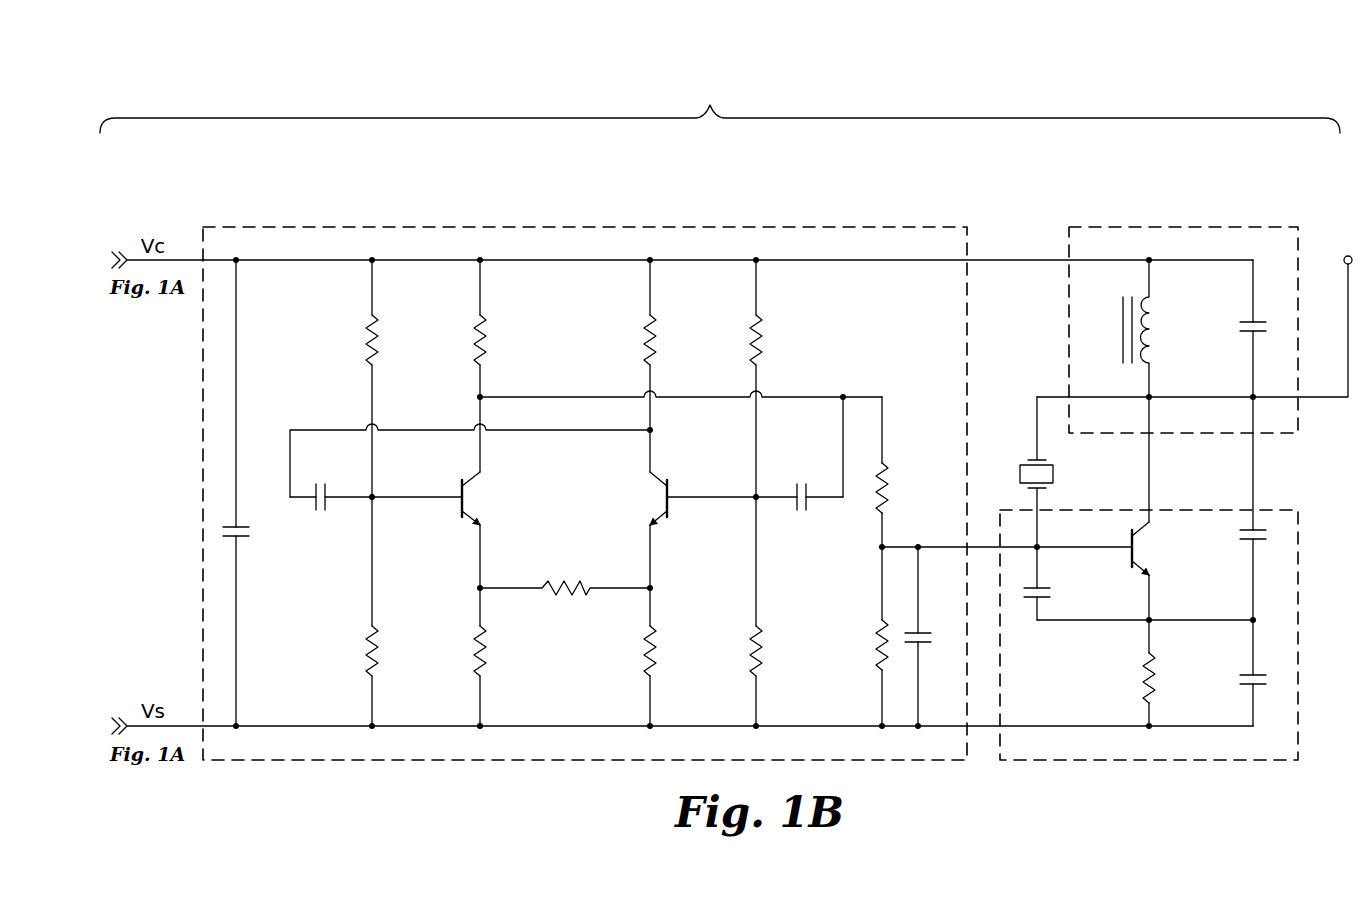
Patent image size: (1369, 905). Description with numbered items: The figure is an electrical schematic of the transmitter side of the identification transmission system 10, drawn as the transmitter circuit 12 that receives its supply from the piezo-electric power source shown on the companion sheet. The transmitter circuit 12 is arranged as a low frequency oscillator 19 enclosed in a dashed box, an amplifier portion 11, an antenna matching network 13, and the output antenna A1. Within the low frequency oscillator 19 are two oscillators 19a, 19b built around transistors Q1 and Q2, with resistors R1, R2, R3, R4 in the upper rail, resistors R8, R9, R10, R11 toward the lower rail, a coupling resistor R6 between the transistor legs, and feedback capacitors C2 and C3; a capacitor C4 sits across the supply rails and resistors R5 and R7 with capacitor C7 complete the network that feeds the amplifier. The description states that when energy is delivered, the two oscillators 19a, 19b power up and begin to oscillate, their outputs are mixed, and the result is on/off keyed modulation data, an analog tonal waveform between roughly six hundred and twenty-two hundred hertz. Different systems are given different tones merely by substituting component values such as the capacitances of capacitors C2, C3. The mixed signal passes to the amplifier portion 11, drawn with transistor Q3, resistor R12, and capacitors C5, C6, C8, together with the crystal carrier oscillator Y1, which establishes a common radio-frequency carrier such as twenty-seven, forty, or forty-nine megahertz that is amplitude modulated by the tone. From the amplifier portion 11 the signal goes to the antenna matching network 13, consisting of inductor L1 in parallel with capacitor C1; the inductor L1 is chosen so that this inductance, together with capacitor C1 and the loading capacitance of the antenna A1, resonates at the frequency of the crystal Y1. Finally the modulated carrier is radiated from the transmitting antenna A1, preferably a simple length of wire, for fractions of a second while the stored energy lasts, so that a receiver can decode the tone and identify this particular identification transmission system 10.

The identification transmission system 10 is at (1061, 88).
The amplifier portion 11 is at (1140, 762).
The transmitter circuit 12 is at (720, 102).
The antenna matching network 13 is at (1216, 223).
The low frequency oscillator 19 is at (811, 223).
The oscillator 19a is at (350, 397).
The oscillator 19b is at (800, 367).
The resistor R1 is at (351, 312).
The resistor R2 is at (629, 312).
The resistor R3 is at (460, 312).
The resistor R4 is at (733, 312).
The resistor R5 is at (903, 455).
The resistor R6 is at (565, 574).
The resistor R7 is at (860, 673).
The resistor R8 is at (351, 676).
The resistor R9 is at (733, 676).
The resistor R10 is at (450, 676).
The resistor R11 is at (621, 676).
The resistor R12 is at (1119, 673).
The capacitor C1 is at (1237, 328).
The capacitor C2 is at (376, 513).
The capacitor C3 is at (755, 513).
The capacitor C4 is at (249, 493).
The capacitor C5 is at (1239, 508).
The capacitor C6 is at (1057, 583).
The capacitor C7 is at (930, 636).
The capacitor C8 is at (1239, 673).
The transistor Q1 is at (481, 498).
The transistor Q2 is at (641, 498).
The transistor Q3 is at (1148, 508).
The inductor L1 is at (1116, 328).
The crystal carrier oscillator Y1 is at (1055, 472).
The transmitting antenna A1 is at (1199, 312).